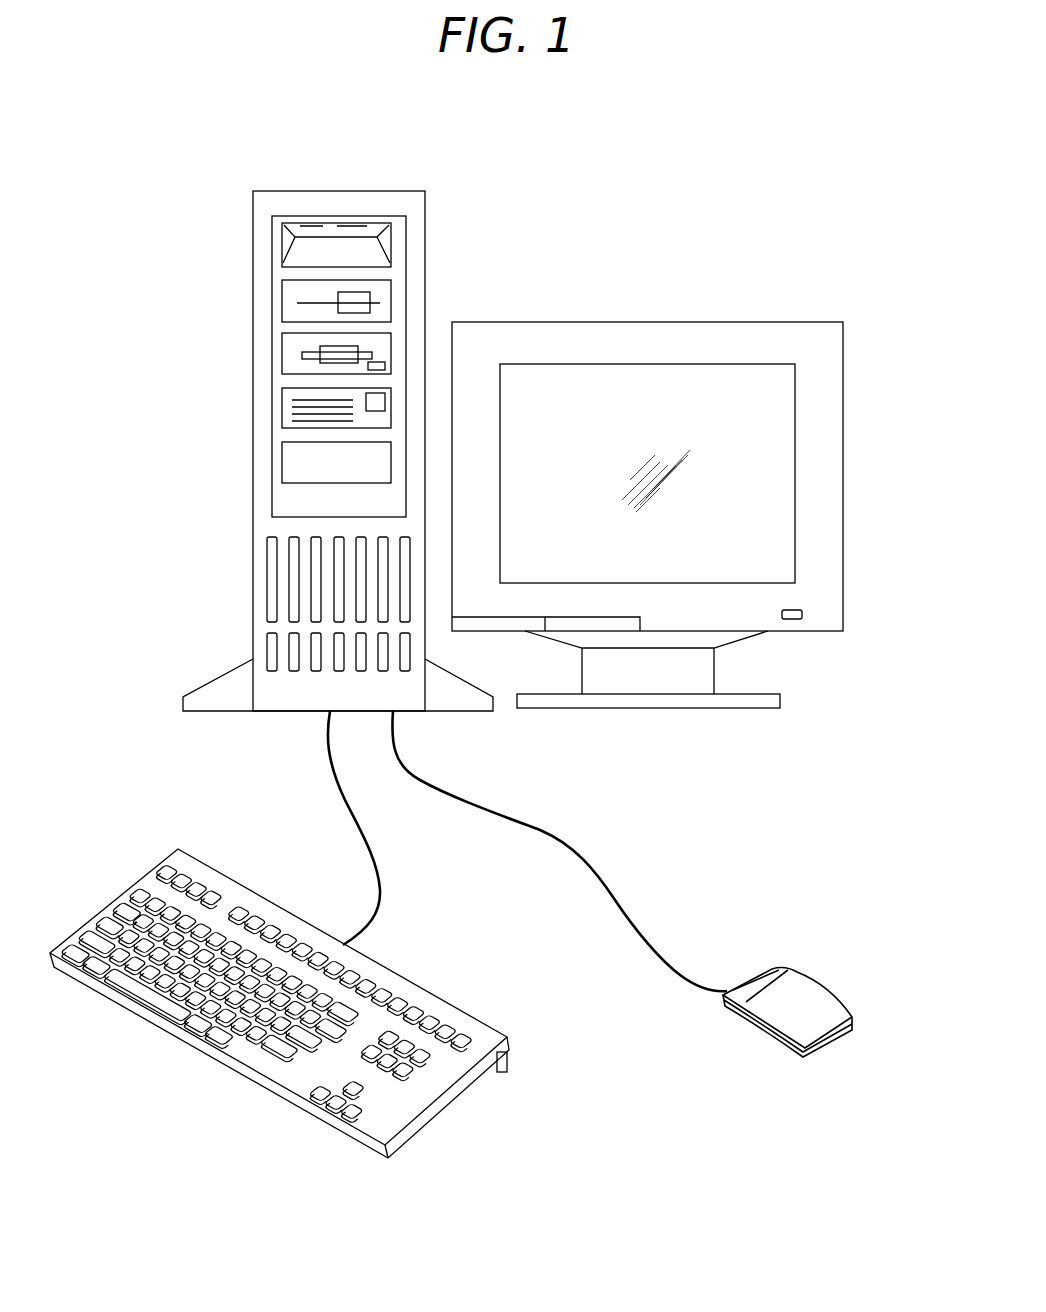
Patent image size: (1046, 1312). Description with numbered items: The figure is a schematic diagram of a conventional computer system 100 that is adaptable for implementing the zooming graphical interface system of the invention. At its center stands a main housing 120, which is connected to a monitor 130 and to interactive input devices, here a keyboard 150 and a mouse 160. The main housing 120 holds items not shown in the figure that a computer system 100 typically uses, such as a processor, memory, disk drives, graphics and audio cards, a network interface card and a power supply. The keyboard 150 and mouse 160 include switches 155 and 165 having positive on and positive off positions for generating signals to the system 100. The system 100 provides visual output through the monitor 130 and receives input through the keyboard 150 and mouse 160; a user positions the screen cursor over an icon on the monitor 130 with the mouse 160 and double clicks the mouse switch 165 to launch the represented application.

The computer system 100 is at (659, 254).
The main housing 120 is at (338, 191).
The monitor 130 is at (843, 477).
The keyboard 150 is at (143, 880).
The switches 155 is at (265, 1003).
The mouse 160 is at (777, 967).
The mouse switch 165 is at (740, 990).